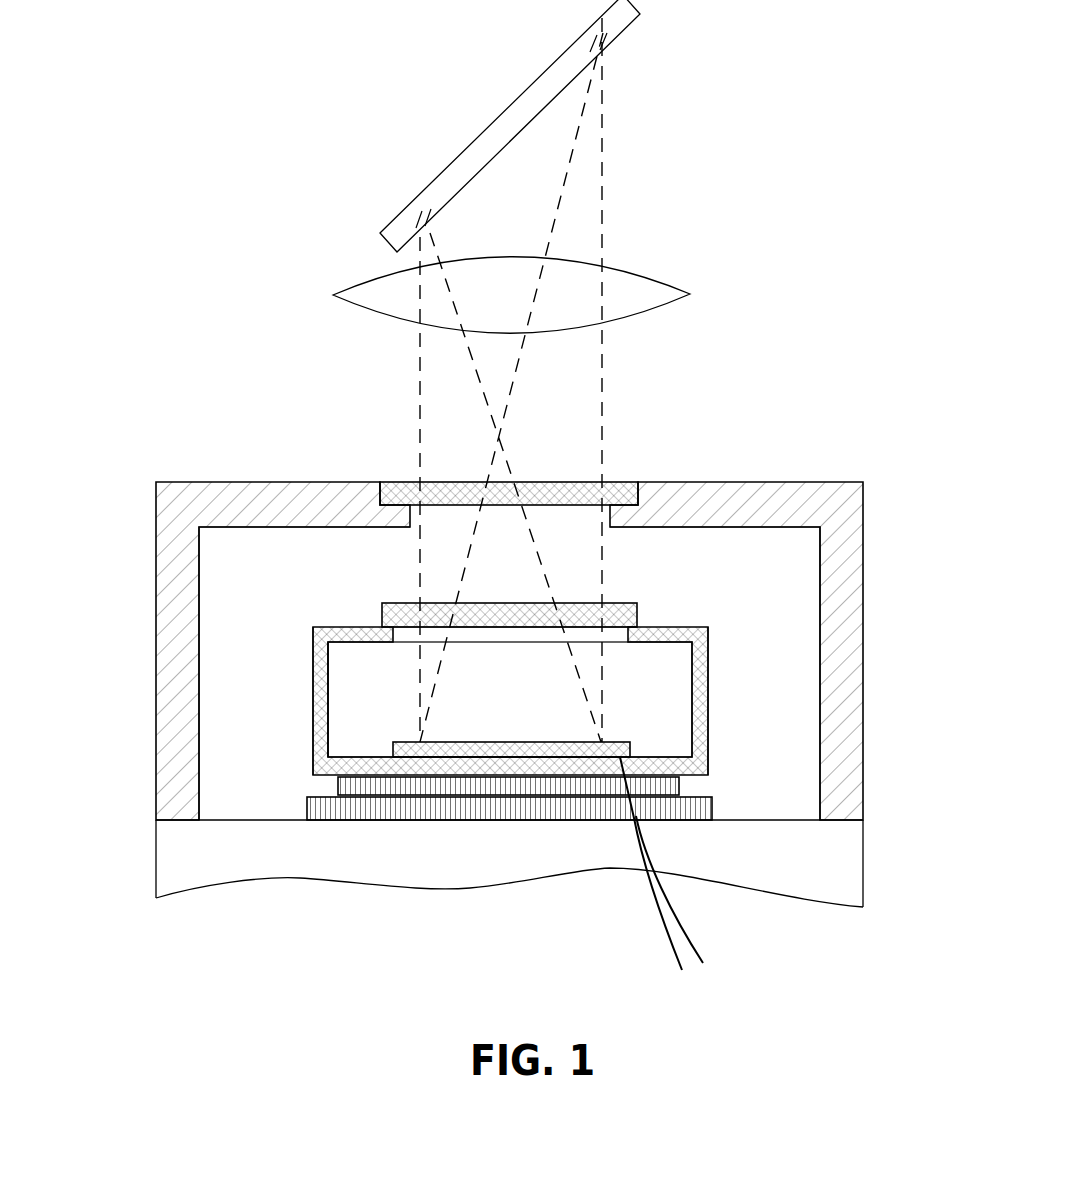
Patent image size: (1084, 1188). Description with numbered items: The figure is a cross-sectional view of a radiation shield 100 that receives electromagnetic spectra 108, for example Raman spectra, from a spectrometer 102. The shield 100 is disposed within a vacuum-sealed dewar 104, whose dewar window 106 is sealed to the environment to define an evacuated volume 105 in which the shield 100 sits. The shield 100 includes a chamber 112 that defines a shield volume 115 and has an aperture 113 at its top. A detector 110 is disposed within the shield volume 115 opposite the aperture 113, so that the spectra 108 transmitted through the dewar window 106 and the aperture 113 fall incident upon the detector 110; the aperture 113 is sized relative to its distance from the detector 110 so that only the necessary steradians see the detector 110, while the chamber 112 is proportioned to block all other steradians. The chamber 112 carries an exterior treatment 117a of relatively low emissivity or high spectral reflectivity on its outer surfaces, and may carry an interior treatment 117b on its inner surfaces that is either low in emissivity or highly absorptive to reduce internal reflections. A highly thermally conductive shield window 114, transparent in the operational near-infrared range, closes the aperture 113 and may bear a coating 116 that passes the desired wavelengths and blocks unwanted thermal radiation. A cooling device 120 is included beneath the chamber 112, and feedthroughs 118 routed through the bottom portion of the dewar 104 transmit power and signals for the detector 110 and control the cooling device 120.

The radiation shield 100 is at (714, 642).
The spectrometer 102 is at (735, 160).
The dewar 104 is at (795, 482).
The evacuated volume 105 is at (509, 673).
The dewar window 106 is at (550, 493).
The electromagnetic spectra 108 is at (482, 430).
The detector 110 is at (567, 748).
The chamber 112 is at (662, 627).
The aperture 113 is at (633, 627).
The shield window 114 is at (552, 626).
The shield volume 115 is at (510, 699).
The coating 116 is at (433, 603).
The exterior treatment 117a is at (313, 697).
The interior treatment 117b is at (329, 718).
The feedthroughs 118 is at (707, 925).
The cooling device 120 is at (503, 803).